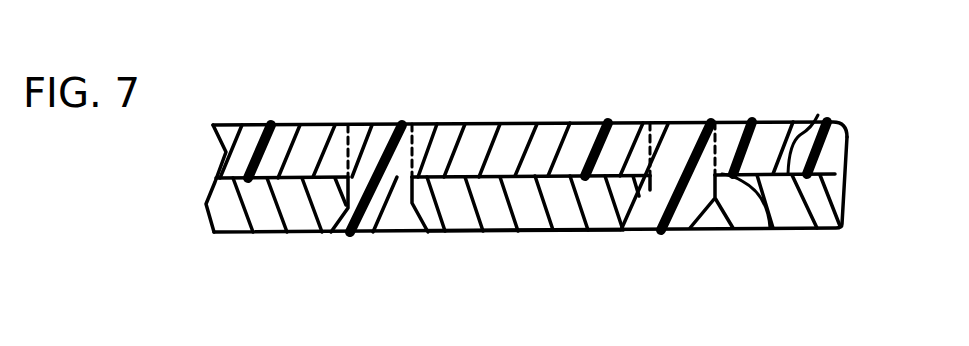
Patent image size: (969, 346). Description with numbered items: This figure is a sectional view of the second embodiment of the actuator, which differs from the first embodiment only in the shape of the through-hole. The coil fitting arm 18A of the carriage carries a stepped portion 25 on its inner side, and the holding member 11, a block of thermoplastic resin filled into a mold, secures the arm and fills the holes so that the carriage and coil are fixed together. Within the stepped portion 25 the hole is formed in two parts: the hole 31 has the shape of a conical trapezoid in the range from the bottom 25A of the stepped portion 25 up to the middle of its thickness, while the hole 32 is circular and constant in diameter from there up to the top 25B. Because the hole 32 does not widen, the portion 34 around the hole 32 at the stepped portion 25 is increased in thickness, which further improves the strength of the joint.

The holding member 11 is at (488, 125).
The coil fitting arm 18A is at (426, 120).
The stepped portion 25 is at (570, 235).
The bottom of stepped portion 25A is at (478, 232).
The top of stepped portion 25B is at (818, 115).
The hole 31 is at (730, 229).
The hole 32 is at (652, 193).
The portion around the hole 34 is at (770, 228).